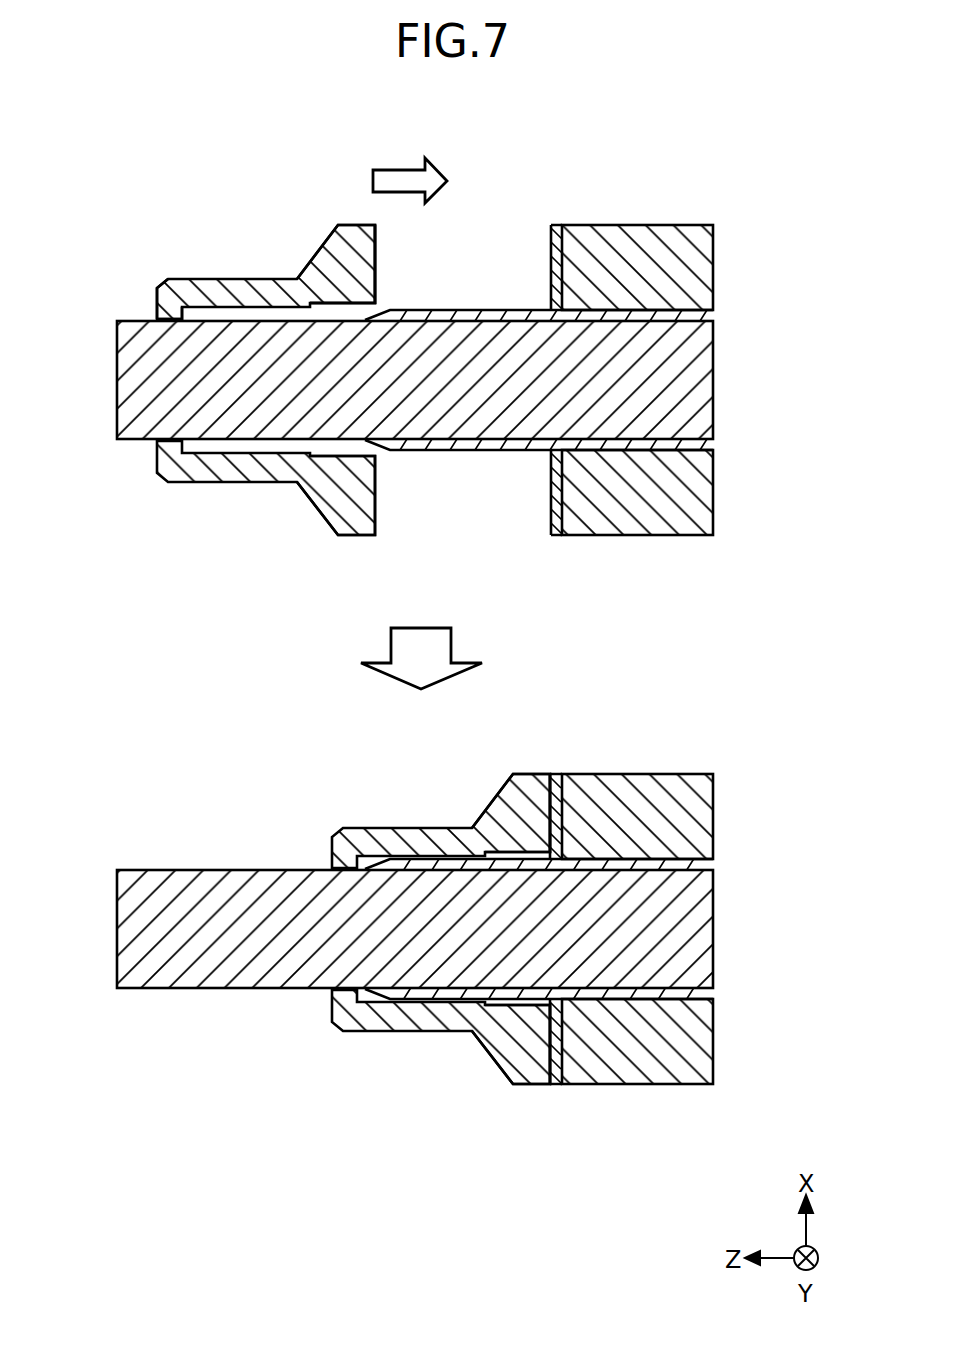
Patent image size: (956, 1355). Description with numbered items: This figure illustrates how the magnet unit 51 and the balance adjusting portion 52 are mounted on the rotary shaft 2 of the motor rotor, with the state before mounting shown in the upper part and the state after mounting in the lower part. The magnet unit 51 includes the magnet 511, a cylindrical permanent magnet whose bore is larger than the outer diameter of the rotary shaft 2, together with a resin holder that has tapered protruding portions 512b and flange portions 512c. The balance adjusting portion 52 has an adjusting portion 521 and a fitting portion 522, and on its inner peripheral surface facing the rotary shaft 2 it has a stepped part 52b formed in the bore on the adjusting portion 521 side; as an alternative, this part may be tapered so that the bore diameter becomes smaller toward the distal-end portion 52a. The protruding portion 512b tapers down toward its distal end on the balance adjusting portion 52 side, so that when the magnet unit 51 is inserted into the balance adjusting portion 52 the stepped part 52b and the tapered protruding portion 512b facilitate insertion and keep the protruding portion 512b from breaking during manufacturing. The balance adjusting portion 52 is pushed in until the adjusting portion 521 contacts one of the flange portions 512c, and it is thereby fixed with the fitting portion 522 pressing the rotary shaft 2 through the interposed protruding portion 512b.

The rotary shaft 2 is at (690, 392).
The magnet unit 51 is at (539, 606).
The magnet 511 is at (635, 243).
The protruding portion 512b is at (498, 312).
The flange portion 512c is at (557, 243).
The balance adjusting portion 52 is at (313, 602).
The adjusting portion 521 is at (323, 265).
The fitting portion 522 is at (193, 297).
The distal-end portion 52a is at (148, 307).
The stepped part 52b is at (382, 296).